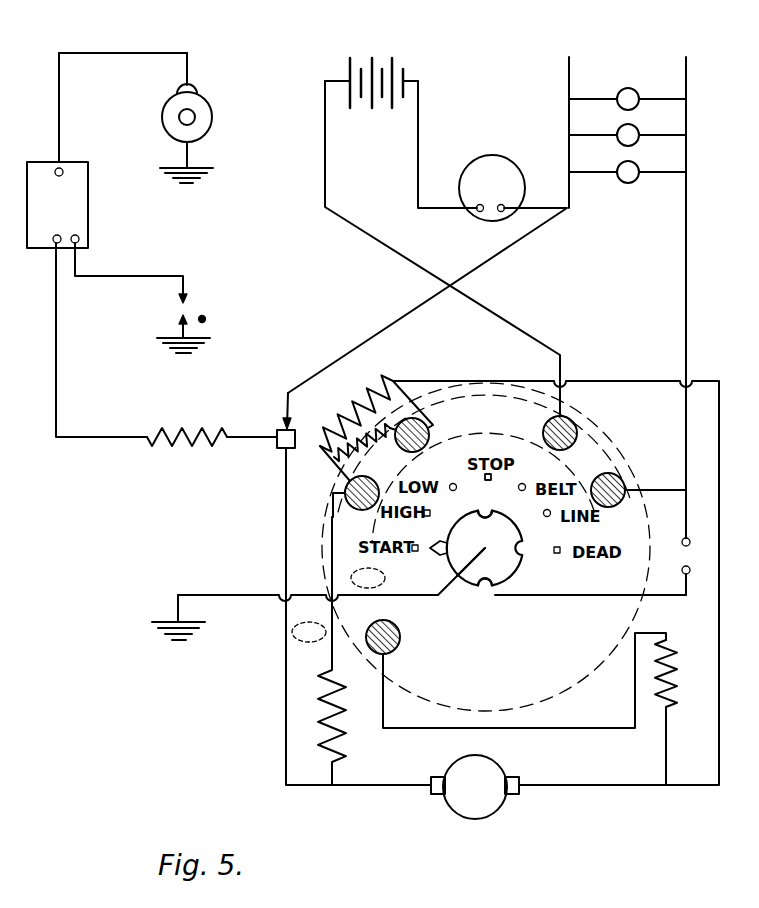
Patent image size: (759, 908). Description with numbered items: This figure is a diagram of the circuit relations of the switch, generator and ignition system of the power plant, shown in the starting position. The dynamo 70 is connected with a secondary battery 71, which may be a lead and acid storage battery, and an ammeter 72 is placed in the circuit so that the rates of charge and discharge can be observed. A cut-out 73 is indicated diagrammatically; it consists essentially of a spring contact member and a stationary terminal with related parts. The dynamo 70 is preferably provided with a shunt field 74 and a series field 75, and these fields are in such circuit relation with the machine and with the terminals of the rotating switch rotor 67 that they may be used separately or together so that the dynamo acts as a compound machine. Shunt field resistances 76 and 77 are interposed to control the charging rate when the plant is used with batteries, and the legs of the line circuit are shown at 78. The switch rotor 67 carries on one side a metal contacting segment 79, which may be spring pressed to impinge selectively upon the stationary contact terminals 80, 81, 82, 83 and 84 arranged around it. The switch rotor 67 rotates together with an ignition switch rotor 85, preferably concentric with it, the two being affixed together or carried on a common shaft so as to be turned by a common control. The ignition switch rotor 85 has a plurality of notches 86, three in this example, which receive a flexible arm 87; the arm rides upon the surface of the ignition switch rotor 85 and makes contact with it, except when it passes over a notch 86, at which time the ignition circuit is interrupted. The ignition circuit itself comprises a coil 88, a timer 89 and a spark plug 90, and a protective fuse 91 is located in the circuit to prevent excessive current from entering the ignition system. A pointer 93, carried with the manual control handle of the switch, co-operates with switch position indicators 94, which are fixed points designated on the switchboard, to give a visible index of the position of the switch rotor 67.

The switch rotor 67 is at (341, 634).
The dynamo 70 is at (497, 772).
The secondary battery 71 is at (394, 68).
The ammeter 72 is at (500, 165).
The cut-out 73 is at (284, 420).
The shunt field 74 is at (320, 712).
The series field 75 is at (674, 654).
The shunt field resistance 76 is at (354, 397).
The shunt field resistance 77 is at (334, 459).
The line circuit legs 78 is at (686, 80).
The metal contacting segment 79 is at (342, 568).
The stationary contact terminal 80 is at (400, 637).
The stationary contact terminal 81 is at (346, 500).
The stationary contact terminal 82 is at (436, 432).
The stationary contact terminal 83 is at (551, 425).
The stationary contact terminal 84 is at (600, 477).
The ignition switch rotor 85 is at (516, 566).
The notches 86 is at (491, 515).
The flexible arm 87 is at (492, 592).
The coil 88 is at (86, 206).
The timer 89 is at (206, 112).
The spark plug 90 is at (188, 301).
The protective fuse 91 is at (693, 548).
The pointer 93 is at (432, 554).
The switch position indicators 94 is at (522, 484).